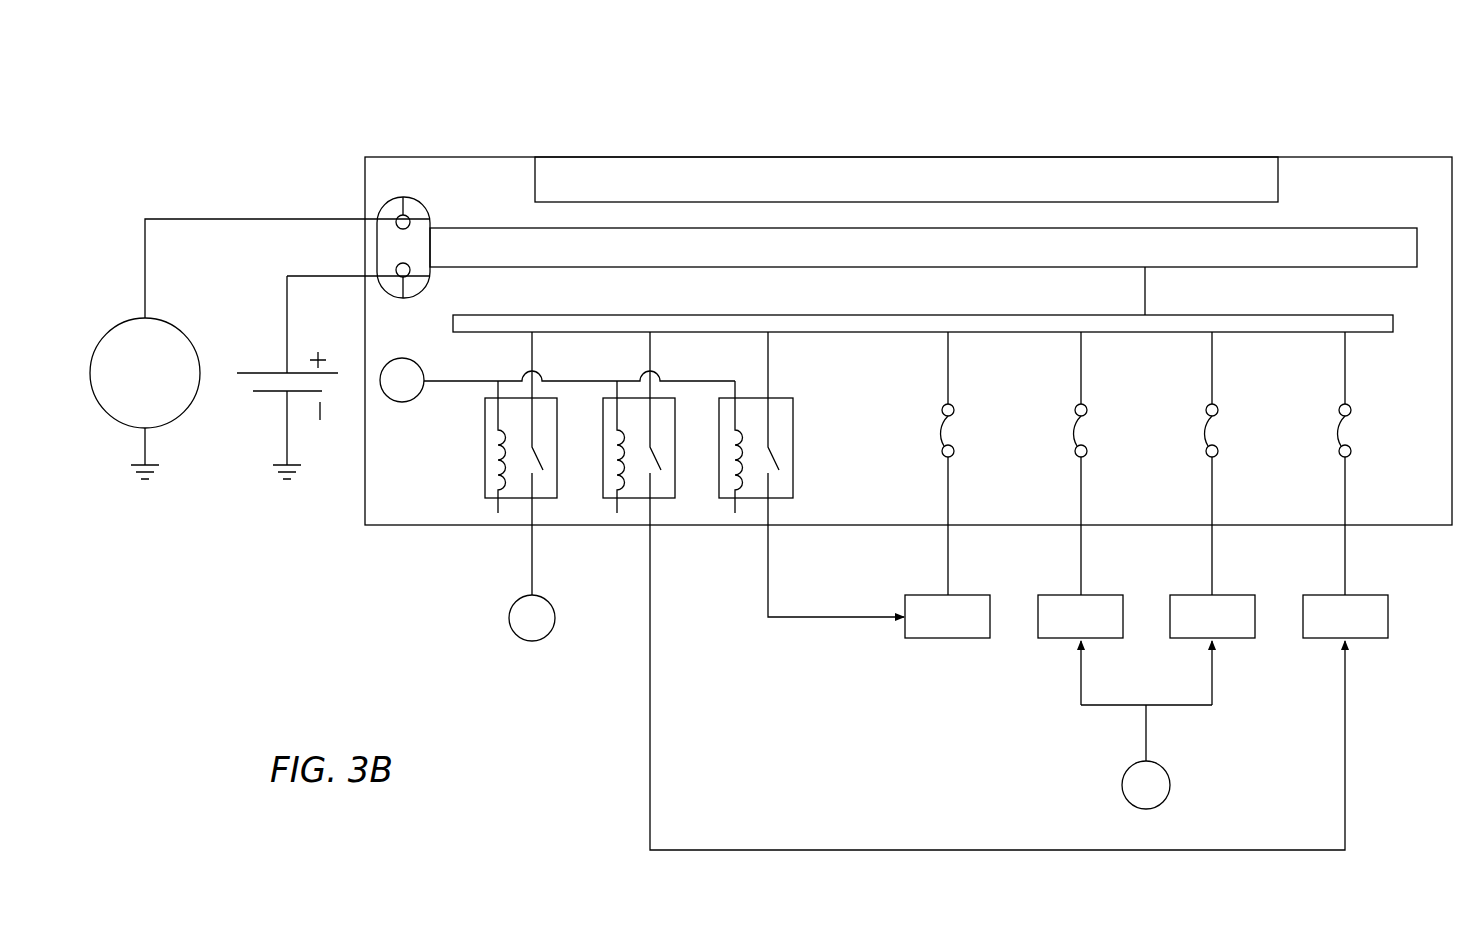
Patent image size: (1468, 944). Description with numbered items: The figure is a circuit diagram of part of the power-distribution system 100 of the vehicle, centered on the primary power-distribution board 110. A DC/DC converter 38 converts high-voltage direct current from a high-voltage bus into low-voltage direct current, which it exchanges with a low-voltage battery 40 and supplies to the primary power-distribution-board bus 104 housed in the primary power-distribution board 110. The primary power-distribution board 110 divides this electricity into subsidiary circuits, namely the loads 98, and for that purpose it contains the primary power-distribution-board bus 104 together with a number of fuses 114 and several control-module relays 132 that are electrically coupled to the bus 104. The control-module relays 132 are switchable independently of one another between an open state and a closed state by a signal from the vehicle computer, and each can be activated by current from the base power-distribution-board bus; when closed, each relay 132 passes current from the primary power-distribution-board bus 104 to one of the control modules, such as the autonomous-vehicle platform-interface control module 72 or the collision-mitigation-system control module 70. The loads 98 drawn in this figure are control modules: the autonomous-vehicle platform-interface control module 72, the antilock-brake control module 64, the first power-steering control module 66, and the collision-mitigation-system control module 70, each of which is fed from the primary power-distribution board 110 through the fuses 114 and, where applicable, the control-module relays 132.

The power-distribution system 100 is at (952, 122).
The primary power-distribution board 110 is at (1394, 157).
The primary power-distribution-board bus 104 is at (1357, 228).
The DC/DC converter 38 is at (120, 318).
The low-voltage battery 40 is at (262, 393).
The control-module relay 132 is at (485, 478).
The fuse 114 is at (951, 420).
The loads 98 is at (872, 590).
The autonomous-vehicle platform-interface control module 72 is at (922, 640).
The antilock-brake control module 64 is at (1056, 640).
The first power-steering control module 66 is at (1237, 640).
The collision-mitigation-system control module 70 is at (1370, 640).